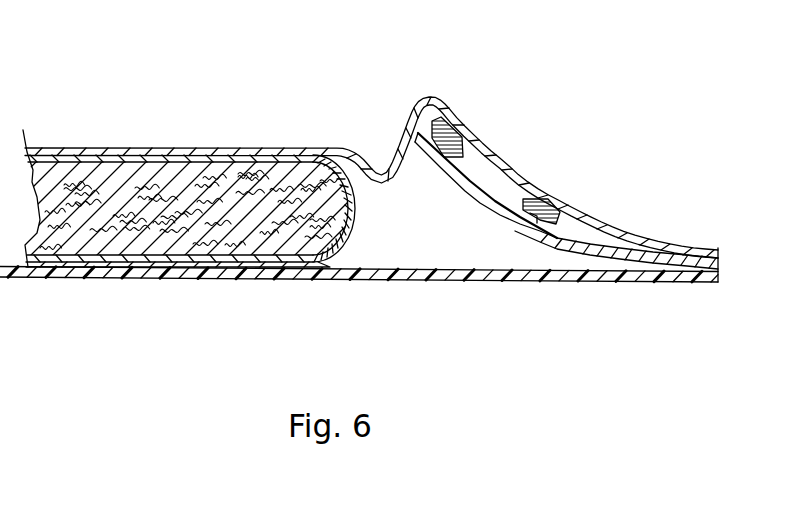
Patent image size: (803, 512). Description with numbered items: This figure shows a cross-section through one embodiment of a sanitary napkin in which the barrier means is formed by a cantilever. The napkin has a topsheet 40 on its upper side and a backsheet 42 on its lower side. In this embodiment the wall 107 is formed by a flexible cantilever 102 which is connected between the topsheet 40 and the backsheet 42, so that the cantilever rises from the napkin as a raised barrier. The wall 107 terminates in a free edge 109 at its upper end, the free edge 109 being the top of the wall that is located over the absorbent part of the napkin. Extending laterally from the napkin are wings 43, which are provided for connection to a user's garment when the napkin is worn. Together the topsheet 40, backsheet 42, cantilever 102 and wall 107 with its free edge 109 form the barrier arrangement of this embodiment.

The topsheet 40 is at (197, 148).
The backsheet 42 is at (407, 280).
The wings 43 is at (627, 232).
The flexible cantilever 102 is at (472, 199).
The wall 107 is at (517, 173).
The free edge 109 is at (420, 100).